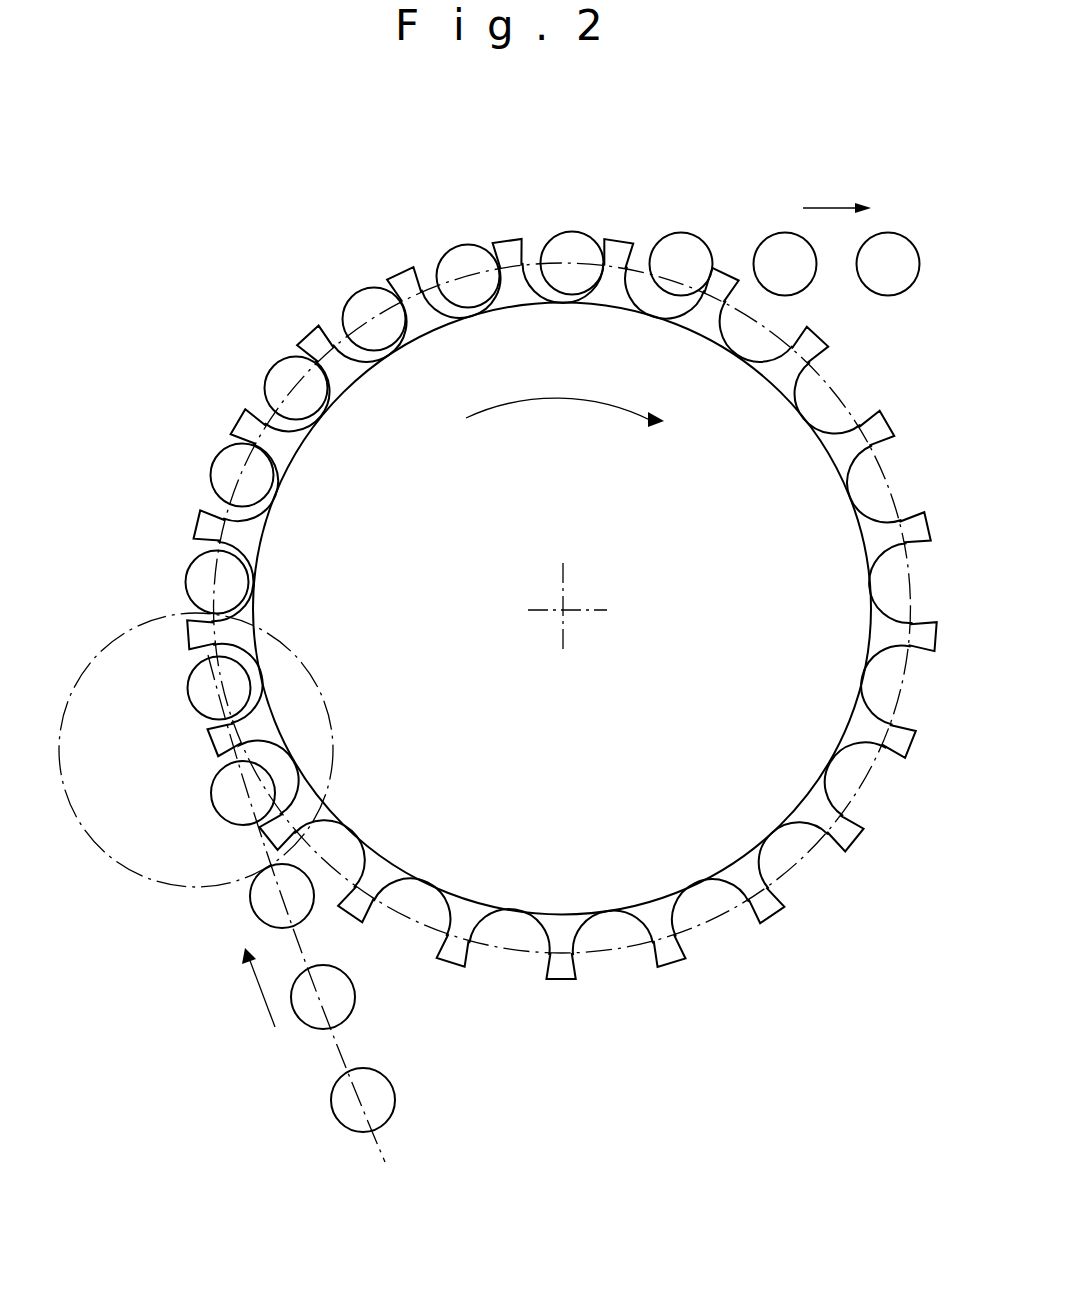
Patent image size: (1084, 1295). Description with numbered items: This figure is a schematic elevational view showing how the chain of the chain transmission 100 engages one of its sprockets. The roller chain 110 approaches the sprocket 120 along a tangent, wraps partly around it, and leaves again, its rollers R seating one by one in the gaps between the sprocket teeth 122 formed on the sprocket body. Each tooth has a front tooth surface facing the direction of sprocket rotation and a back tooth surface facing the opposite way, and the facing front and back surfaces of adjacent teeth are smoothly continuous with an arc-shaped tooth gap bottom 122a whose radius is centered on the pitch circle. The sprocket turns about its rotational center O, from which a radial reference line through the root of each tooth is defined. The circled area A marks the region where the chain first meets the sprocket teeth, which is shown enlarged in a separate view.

The chain transmission 100 is at (762, 149).
The roller chain 110 is at (408, 1147).
The sprocket 120 is at (599, 758).
The sprocket tooth 122 is at (310, 338).
The tooth gap bottom 122a is at (549, 295).
The roller R is at (456, 248).
The rotational center O is at (565, 612).
The area A is at (112, 642).